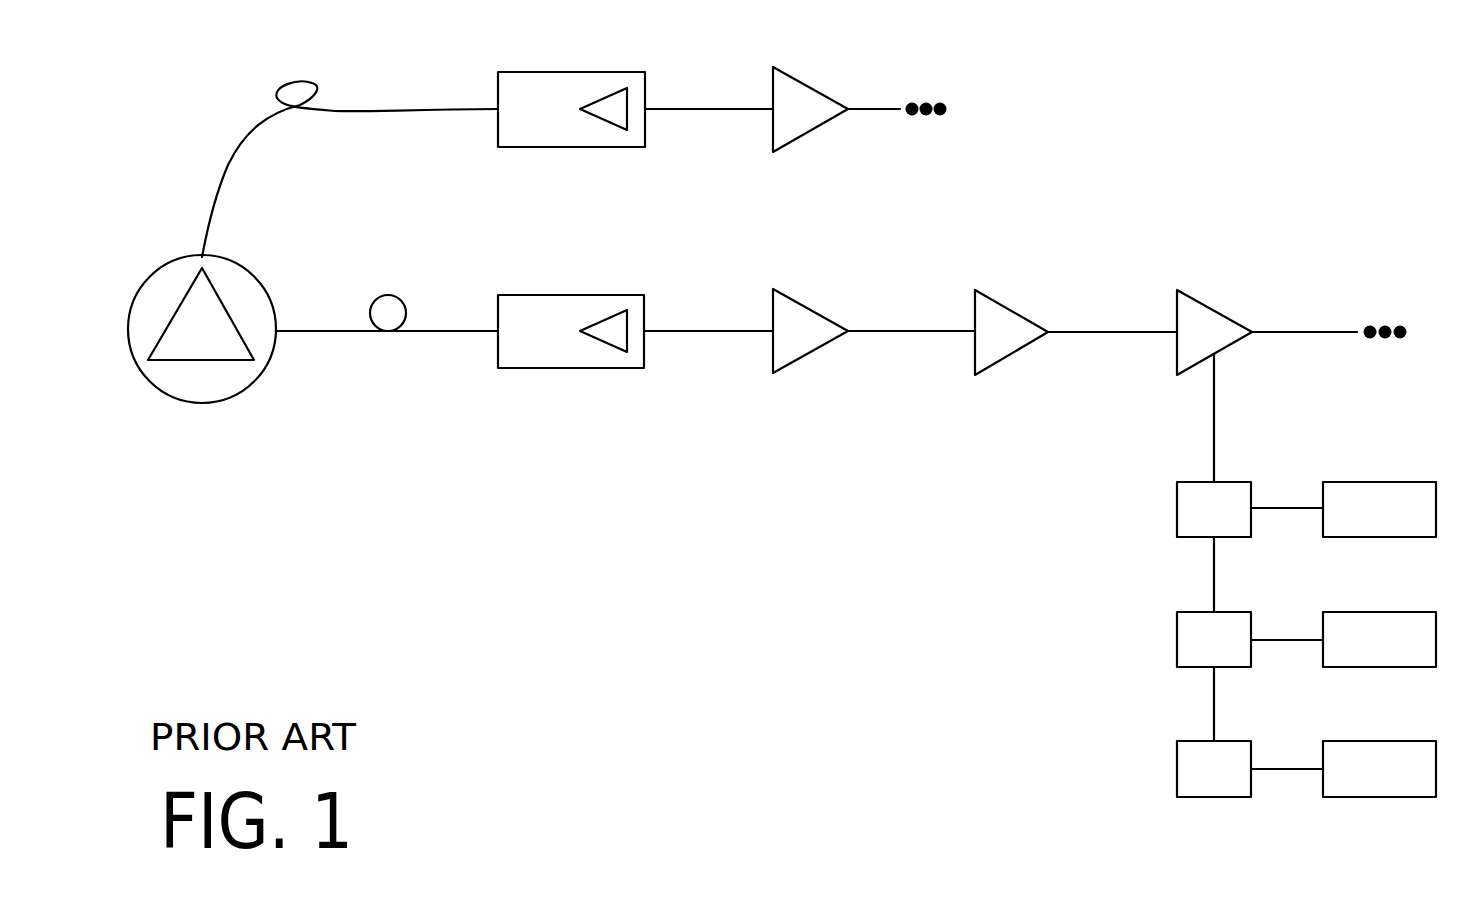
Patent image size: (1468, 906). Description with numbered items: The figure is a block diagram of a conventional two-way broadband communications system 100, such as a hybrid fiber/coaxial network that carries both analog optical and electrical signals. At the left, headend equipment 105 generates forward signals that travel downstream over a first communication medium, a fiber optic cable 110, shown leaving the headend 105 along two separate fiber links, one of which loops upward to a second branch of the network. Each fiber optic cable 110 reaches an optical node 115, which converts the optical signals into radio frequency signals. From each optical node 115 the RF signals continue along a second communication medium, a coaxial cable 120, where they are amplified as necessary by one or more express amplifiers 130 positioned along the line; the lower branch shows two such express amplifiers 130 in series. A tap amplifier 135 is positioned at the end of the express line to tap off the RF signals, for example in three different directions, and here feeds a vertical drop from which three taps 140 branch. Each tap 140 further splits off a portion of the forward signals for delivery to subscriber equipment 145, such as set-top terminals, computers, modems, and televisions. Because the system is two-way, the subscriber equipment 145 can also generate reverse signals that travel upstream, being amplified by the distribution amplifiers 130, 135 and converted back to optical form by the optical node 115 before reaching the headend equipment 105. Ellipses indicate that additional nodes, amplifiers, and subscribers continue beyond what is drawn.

The broadband communications system 100 is at (841, 691).
The headend equipment 105 is at (200, 403).
The fiber optic cable 110 is at (220, 172).
The optical node 115 is at (533, 72).
The coaxial cable 120 is at (738, 109).
The express amplifier 130 is at (790, 73).
The tap amplifier 135 is at (1195, 297).
The tap 140 is at (1230, 482).
The subscriber equipment 145 is at (1360, 482).